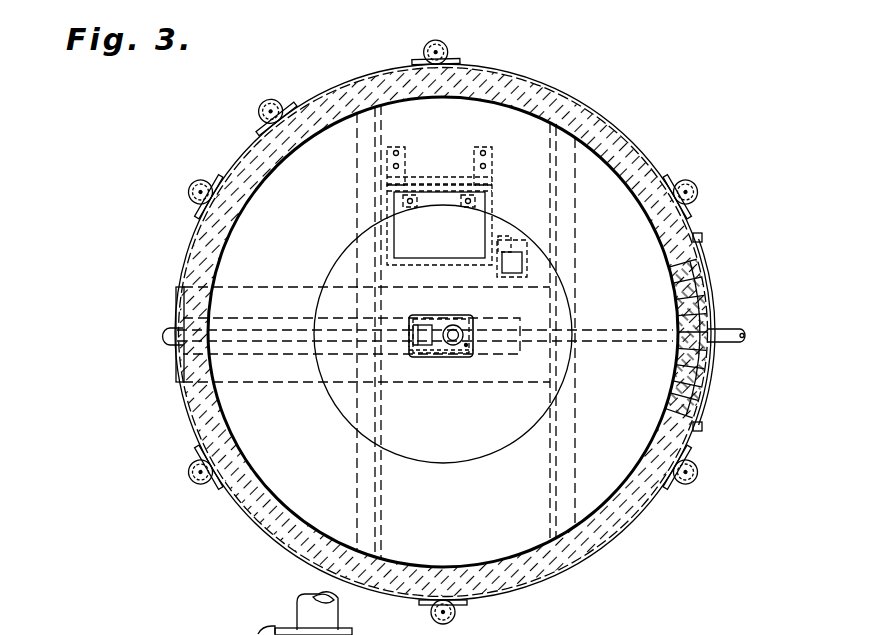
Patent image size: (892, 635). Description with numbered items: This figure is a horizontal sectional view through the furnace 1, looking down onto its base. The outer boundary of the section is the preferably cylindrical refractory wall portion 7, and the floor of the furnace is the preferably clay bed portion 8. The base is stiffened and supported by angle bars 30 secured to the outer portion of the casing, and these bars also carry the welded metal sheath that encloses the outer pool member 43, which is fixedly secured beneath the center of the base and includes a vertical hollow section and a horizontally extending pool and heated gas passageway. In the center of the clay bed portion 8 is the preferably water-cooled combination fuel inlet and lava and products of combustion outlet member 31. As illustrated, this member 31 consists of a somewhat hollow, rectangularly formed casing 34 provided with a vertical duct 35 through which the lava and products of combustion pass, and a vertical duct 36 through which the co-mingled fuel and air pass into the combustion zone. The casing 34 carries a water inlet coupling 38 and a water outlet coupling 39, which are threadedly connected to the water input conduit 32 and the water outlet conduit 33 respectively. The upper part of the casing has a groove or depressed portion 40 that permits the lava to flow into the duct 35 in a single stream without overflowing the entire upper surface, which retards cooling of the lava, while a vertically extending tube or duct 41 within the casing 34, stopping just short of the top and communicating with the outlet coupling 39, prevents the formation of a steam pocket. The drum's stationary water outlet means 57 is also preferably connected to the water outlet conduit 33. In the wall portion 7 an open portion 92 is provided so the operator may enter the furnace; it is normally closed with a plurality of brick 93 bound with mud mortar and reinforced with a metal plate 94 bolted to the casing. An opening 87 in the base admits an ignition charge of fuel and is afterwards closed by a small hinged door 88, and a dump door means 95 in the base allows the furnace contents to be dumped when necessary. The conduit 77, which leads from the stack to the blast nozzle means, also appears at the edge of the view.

The furnace 1 is at (620, 126).
The refractory wall portion 7 is at (640, 170).
The clay bed portion 8 is at (530, 137).
The angle bars 30 is at (382, 496).
The combination fuel inlet and lava and products of combustion outlet member 31 is at (442, 358).
The water input conduit 32 is at (167, 327).
The water outlet conduit 33 is at (723, 328).
The casing 34 is at (448, 318).
The vertical duct 35 is at (428, 327).
The vertical duct 36 is at (456, 343).
The water inlet coupling 38 is at (406, 347).
The water outlet coupling 39 is at (477, 346).
The groove or depressed portion 40 is at (413, 327).
The vertically extending tube or duct 41 is at (462, 352).
The outer pool member 43 is at (528, 384).
The water outlet means 57 is at (288, 625).
The conduit 77 is at (283, 103).
The opening 87 is at (519, 257).
The small hinged door 88 is at (525, 262).
The open portion 92 is at (690, 269).
The brick 93 is at (693, 363).
The metal plate 94 is at (703, 390).
The dump door means 95 is at (494, 208).